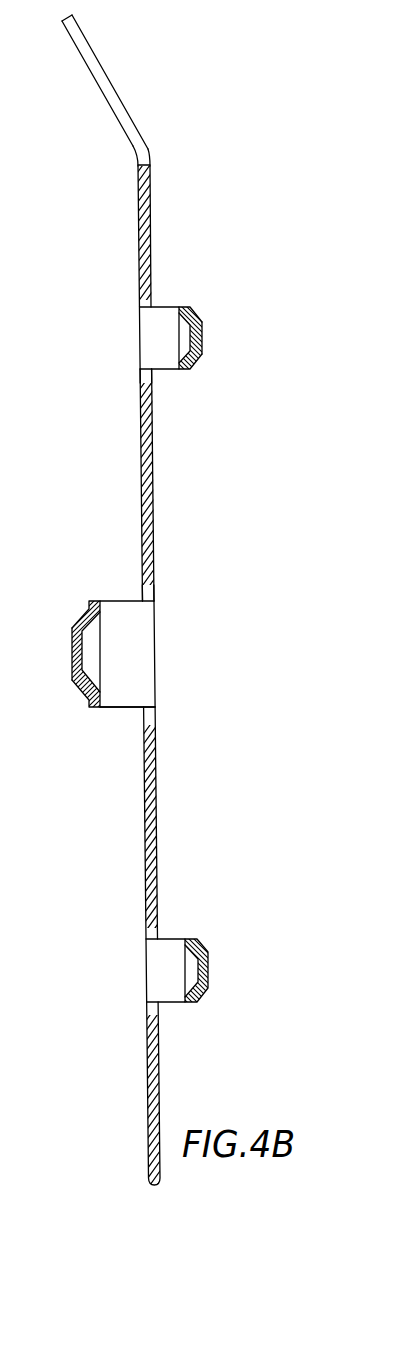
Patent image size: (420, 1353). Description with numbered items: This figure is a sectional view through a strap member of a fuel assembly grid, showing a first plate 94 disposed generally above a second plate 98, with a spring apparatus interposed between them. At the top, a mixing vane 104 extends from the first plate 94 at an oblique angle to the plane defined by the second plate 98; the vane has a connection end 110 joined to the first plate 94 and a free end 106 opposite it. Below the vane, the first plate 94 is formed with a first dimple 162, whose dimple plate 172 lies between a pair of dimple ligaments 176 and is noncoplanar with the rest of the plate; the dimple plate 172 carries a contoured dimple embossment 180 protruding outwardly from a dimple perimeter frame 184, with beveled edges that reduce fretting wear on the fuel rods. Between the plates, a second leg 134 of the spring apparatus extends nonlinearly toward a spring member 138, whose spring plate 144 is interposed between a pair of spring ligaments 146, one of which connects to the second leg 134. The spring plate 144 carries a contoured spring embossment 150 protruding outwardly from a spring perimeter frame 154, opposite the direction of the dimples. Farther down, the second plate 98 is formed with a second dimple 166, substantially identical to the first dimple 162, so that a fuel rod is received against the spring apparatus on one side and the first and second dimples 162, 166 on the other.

The first plate 94 is at (158, 473).
The second plate 98 is at (160, 810).
The mixing vane 104 is at (113, 77).
The free end 106 is at (64, 17).
The connection end 110 is at (150, 156).
The second leg 134 is at (148, 590).
The spring member 138 is at (116, 716).
The spring plate 144 is at (81, 714).
The spring ligaments 146 is at (125, 600).
The spring embossment 150 is at (72, 654).
The spring perimeter frame 154 is at (88, 607).
The first dimple 162 is at (168, 298).
The second dimple 166 is at (180, 932).
The dimple plate 172 is at (189, 380).
The dimple ligaments 176 is at (165, 372).
The dimple embossment 180 is at (203, 330).
The dimple perimeter frame 184 is at (192, 310).